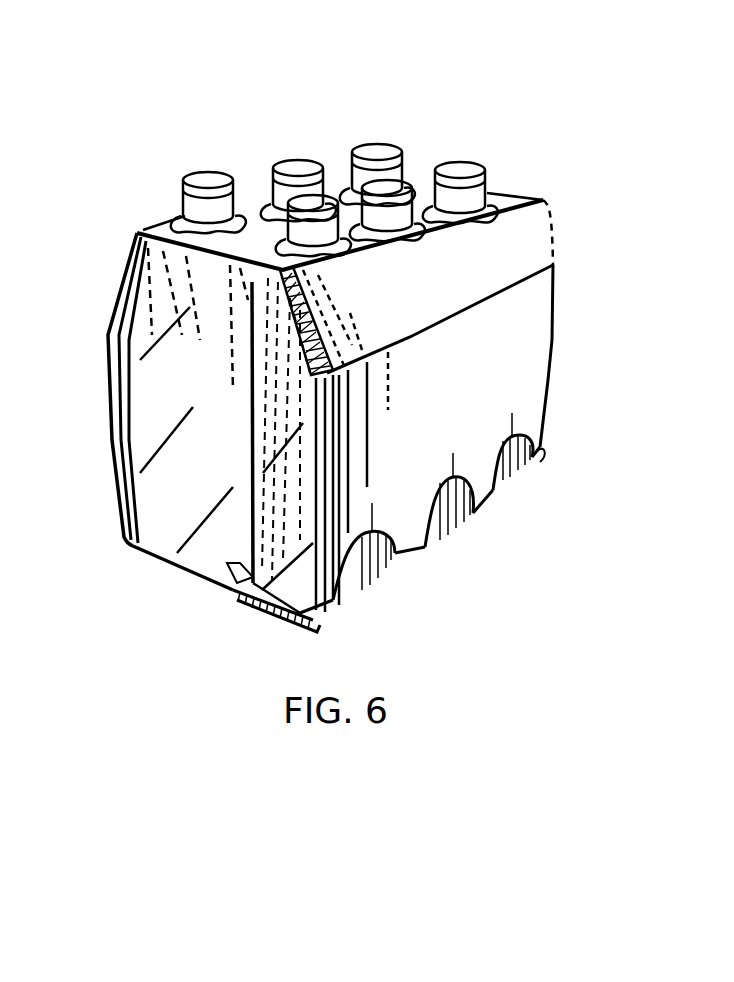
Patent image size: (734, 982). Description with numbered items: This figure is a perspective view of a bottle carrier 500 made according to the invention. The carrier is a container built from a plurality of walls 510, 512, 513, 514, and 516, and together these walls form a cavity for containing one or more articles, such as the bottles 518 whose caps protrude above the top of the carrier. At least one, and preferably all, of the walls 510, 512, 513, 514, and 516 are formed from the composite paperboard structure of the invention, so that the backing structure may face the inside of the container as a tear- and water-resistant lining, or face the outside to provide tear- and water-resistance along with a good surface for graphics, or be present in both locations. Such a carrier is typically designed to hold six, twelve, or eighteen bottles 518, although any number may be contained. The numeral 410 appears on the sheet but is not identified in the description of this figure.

The bottles 410 is at (32, 24).
The bottle carrier 500 is at (437, 77).
The wall 510 is at (527, 360).
The wall 512 is at (548, 224).
The wall 513 is at (427, 183).
The wall 514 is at (130, 372).
The wall 516 is at (287, 600).
The bottles 518 is at (171, 513).